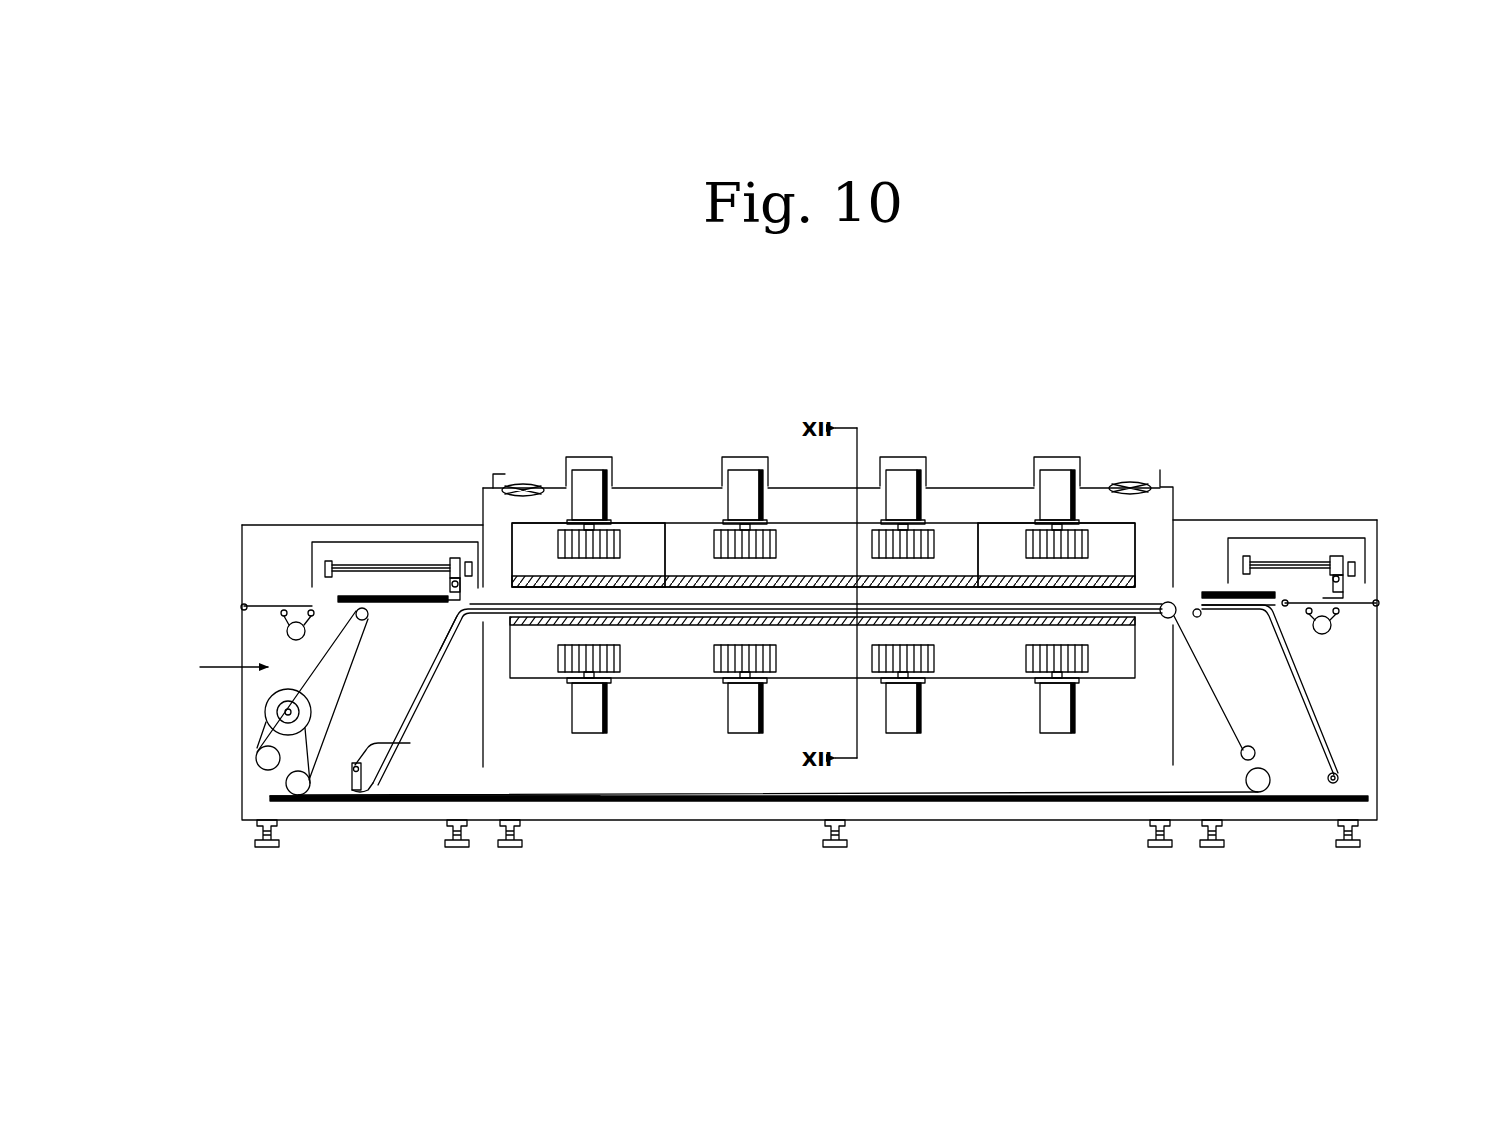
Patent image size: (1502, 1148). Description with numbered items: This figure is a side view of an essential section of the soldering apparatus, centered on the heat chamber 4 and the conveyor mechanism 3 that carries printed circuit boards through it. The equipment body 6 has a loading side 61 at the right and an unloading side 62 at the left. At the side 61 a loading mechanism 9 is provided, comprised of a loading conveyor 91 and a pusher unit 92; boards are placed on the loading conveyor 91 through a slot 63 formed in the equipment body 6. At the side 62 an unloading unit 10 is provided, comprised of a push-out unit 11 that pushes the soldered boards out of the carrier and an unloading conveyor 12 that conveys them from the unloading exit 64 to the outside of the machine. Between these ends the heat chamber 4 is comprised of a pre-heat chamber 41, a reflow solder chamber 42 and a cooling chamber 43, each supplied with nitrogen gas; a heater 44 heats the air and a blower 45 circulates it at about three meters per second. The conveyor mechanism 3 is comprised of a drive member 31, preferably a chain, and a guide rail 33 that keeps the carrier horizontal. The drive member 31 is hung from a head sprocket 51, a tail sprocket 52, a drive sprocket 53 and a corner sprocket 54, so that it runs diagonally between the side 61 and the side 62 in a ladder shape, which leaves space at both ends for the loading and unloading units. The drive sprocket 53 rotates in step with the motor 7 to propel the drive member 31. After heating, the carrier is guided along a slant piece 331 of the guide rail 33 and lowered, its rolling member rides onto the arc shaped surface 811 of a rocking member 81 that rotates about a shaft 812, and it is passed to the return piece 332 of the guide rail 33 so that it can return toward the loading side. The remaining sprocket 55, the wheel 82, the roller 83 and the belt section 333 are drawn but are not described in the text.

The conveyor mechanism 3 is at (1208, 552).
The heat chamber 4 is at (1062, 454).
The equipment body 6 is at (1085, 821).
The motor 7 is at (265, 713).
The loading mechanism 9 is at (1360, 510).
The unloading unit 10 is at (412, 552).
The push-out unit 11 is at (373, 557).
The unloading conveyor 12 is at (268, 598).
The drive member 31 is at (330, 668).
The guide rail 33 is at (648, 604).
The pre-heat chamber 41 is at (963, 542).
The reflow solder chamber 42 is at (792, 545).
The cooling chamber 43 is at (631, 543).
The heater 44 is at (530, 580).
The blower 45 is at (553, 540).
The head sprocket 51 is at (1158, 620).
The tail sprocket 52 is at (370, 617).
The drive sprocket 53 is at (292, 772).
The corner sprocket 54 is at (1246, 773).
The roller 55 is at (1256, 745).
The side of the equipment body 61 is at (1360, 450).
The side of the equipment body 62 is at (214, 666).
The slot 63 is at (1385, 600).
The unloading exit 64 is at (242, 605).
The rocking member 81 is at (348, 778).
The wheel 82 is at (1345, 777).
The roller 83 is at (1203, 617).
The loading conveyor 91 is at (1295, 585).
The pusher unit 92 is at (1312, 555).
The slant piece 331 is at (452, 648).
The return piece 332 is at (573, 803).
The belt section 333 is at (1327, 729).
The arc shaped surface 811 is at (367, 790).
The shaft 812 is at (410, 743).